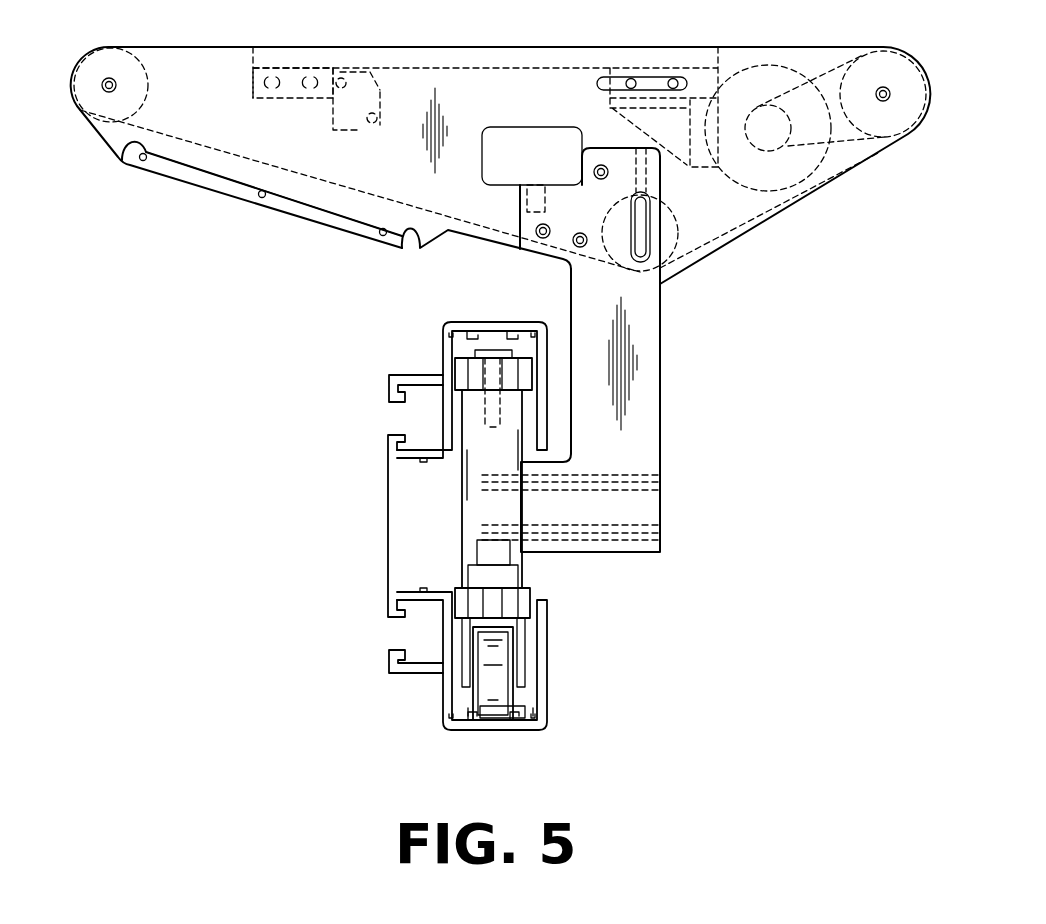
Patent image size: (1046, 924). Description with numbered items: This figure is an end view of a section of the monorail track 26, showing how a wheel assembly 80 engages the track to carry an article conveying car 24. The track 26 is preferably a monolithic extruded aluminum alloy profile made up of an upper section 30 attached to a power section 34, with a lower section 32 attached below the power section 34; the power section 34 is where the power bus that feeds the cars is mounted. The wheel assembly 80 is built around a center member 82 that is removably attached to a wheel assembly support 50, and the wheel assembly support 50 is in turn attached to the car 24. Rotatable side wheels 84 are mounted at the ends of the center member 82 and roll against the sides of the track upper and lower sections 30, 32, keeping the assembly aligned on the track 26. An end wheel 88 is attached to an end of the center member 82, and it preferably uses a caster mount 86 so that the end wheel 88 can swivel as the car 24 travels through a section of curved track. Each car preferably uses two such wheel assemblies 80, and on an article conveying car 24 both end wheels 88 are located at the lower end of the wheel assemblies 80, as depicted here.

The article conveying car 24 is at (259, 216).
The monorail track 26 is at (416, 538).
The upper section 30 is at (443, 325).
The lower section 32 is at (450, 730).
The power section 34 is at (388, 563).
The wheel assembly support 50 is at (650, 363).
The wheel assembly 80 is at (538, 497).
The center member 82 is at (463, 512).
The side wheels 84 is at (523, 367).
The caster mount 86 is at (516, 633).
The end wheel 88 is at (508, 708).